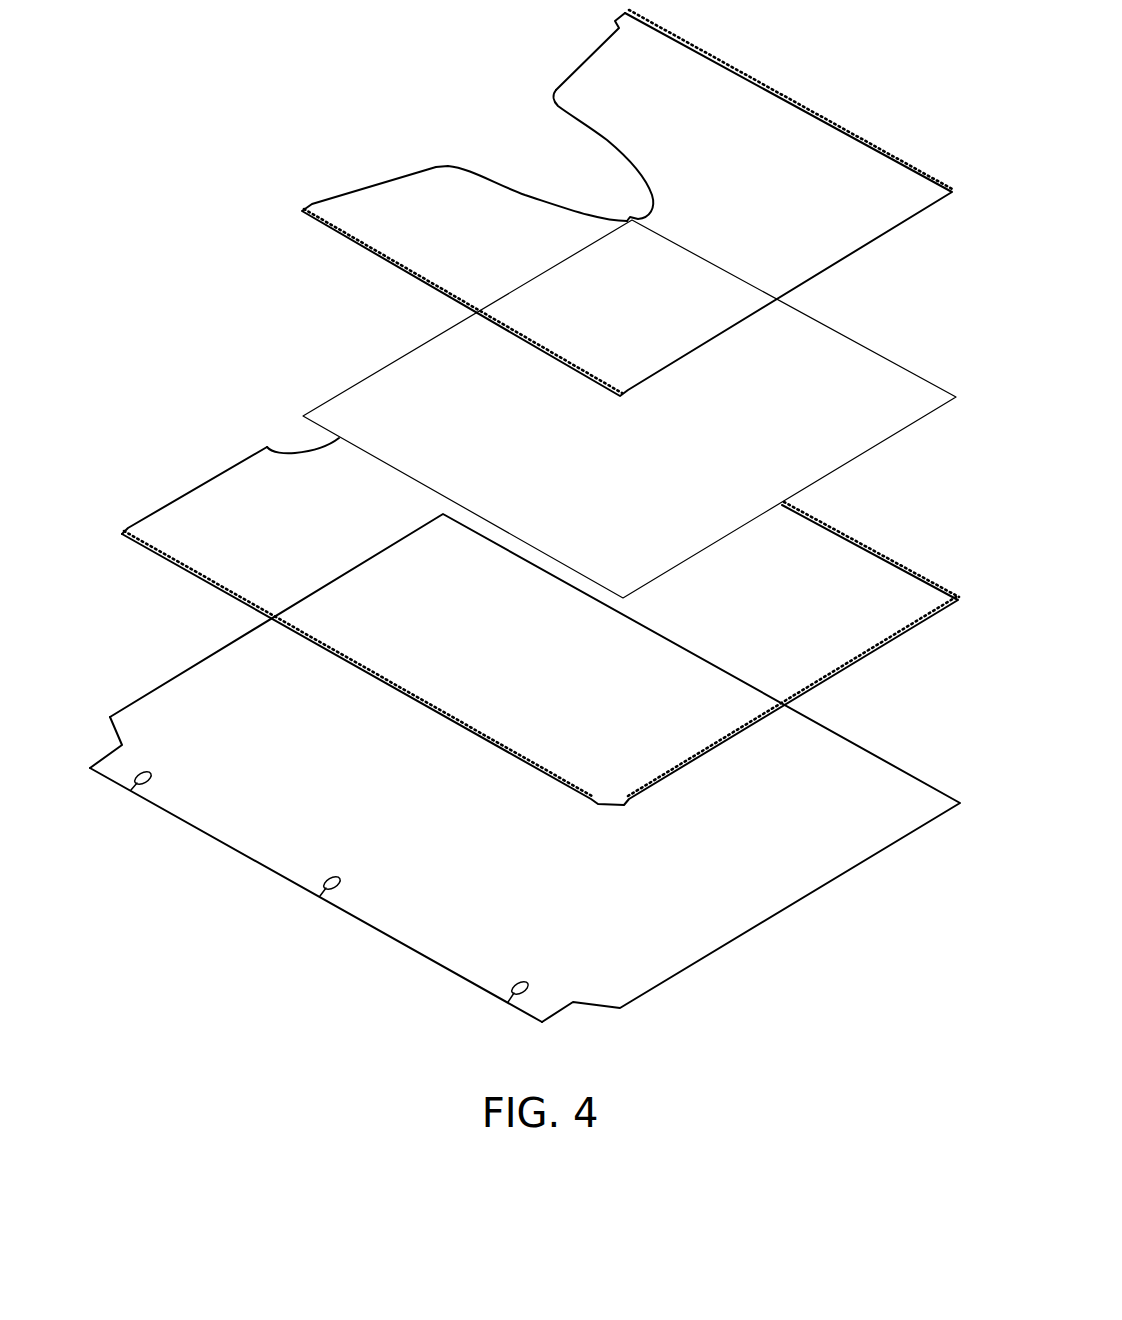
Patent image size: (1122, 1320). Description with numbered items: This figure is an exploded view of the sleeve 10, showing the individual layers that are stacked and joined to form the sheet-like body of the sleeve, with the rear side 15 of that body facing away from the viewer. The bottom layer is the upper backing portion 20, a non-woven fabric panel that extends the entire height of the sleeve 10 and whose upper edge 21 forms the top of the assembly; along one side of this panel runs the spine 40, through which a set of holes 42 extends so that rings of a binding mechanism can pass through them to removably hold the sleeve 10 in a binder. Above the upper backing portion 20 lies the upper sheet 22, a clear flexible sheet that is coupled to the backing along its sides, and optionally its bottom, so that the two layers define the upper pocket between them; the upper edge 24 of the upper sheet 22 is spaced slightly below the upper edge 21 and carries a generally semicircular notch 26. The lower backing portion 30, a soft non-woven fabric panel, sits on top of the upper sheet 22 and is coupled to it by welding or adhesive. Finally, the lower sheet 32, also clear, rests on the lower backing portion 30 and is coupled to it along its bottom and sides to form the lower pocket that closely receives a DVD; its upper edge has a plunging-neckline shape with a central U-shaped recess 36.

The sleeve 10 is at (176, 324).
The rear side 15 is at (390, 951).
The upper backing portion 20 is at (893, 793).
The upper edge of the upper backing portion 21 is at (175, 674).
The upper sheet 22 is at (883, 587).
The upper edge of the upper sheet 24 is at (217, 475).
The semicircular notch 26 is at (280, 452).
The lower backing portion 30 is at (872, 374).
The lower sheet 32 is at (824, 152).
The central U-shaped recess 36 is at (583, 122).
The spine 40 is at (218, 838).
The holes 42 is at (129, 789).